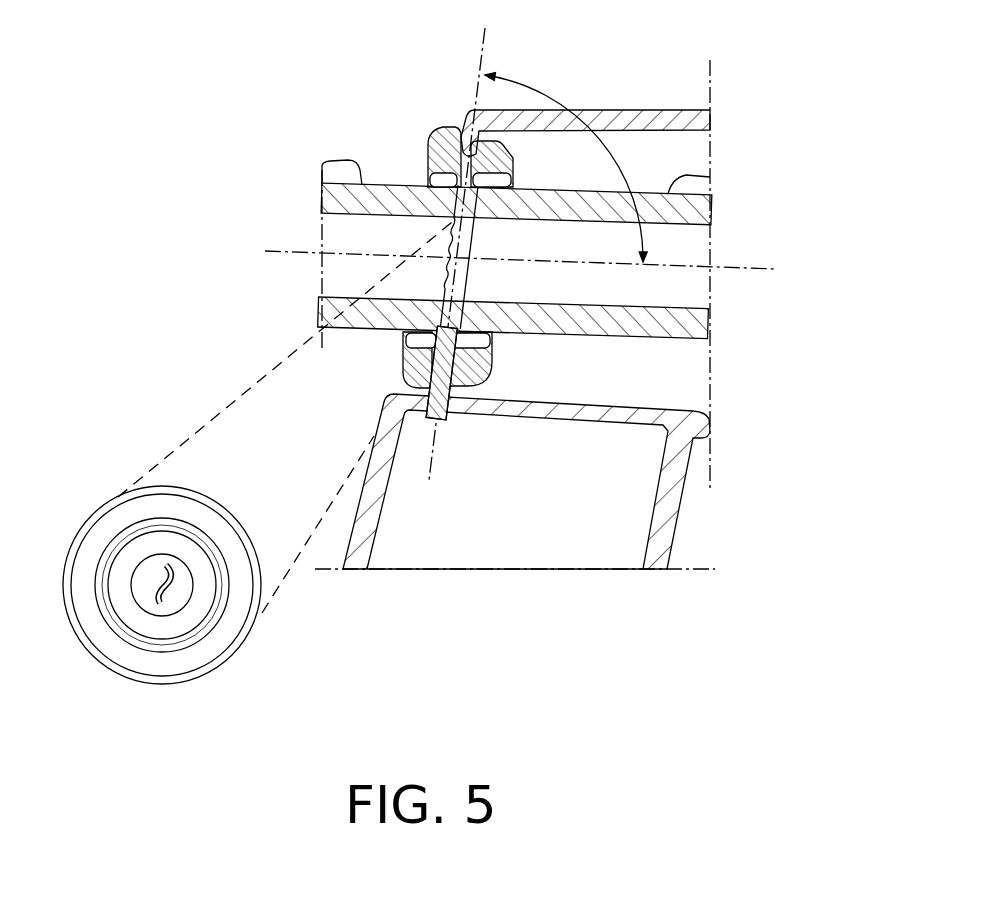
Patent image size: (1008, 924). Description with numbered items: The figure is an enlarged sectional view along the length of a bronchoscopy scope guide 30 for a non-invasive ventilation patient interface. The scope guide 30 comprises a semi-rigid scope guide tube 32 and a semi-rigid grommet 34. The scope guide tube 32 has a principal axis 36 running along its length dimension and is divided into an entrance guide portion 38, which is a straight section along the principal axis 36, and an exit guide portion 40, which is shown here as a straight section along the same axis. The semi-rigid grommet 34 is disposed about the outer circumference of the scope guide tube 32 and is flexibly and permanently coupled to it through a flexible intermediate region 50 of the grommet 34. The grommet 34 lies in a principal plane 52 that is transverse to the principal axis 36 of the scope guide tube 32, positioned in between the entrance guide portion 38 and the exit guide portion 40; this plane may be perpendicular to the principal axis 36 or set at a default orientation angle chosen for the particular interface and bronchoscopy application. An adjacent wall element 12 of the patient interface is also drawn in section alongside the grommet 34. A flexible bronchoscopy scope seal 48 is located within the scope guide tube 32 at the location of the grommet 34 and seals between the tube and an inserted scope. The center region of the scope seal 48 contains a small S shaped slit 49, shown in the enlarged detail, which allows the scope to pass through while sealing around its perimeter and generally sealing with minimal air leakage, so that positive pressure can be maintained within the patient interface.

The upper panel 12 is at (618, 104).
The bronchoscopy scope guide 30 is at (366, 141).
The scope guide tube 32 is at (330, 200).
The semi-rigid grommet 34 is at (428, 146).
The principal axis 36 is at (742, 270).
The entrance guide portion 38 is at (322, 166).
The exit guide portion 40 is at (710, 177).
The bronchoscopy scope seal 48 is at (447, 270).
The S shaped slit 49 is at (168, 592).
The flexible intermediate region 50 is at (432, 339).
The principal plane 52 is at (485, 30).